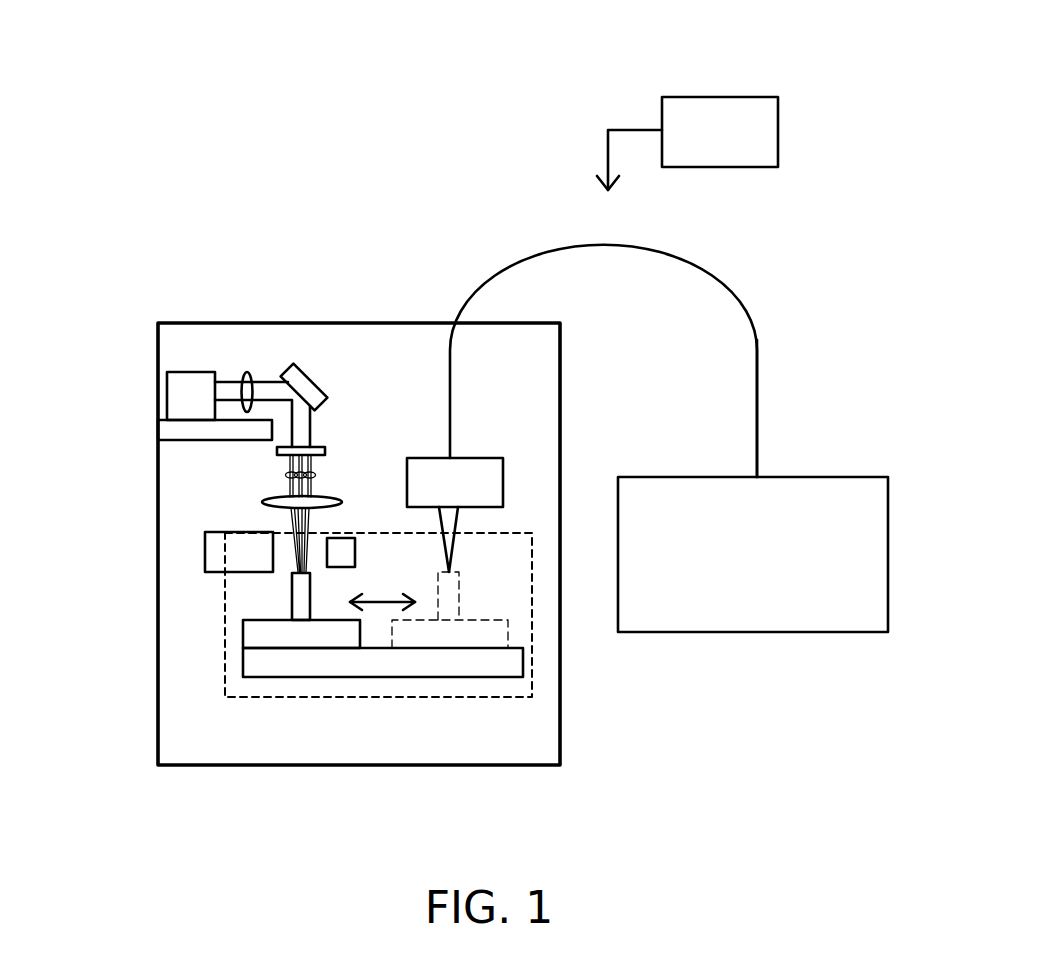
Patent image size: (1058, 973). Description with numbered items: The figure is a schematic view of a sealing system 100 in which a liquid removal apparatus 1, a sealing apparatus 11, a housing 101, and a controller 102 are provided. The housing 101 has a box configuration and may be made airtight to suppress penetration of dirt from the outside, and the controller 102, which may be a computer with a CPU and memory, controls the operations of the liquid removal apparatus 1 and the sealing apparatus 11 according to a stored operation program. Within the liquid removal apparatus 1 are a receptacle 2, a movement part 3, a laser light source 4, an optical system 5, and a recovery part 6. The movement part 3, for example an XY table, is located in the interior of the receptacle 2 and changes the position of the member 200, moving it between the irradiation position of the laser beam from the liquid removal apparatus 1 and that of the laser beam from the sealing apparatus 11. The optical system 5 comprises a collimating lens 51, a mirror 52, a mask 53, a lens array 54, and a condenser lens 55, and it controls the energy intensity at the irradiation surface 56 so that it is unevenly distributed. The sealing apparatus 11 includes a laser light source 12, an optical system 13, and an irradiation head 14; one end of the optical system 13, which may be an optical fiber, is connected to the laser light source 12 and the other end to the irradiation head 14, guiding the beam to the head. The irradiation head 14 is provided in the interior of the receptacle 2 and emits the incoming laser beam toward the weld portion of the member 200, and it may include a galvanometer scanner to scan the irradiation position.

The sealing system 100 is at (138, 240).
The liquid removal apparatus 1 is at (265, 342).
The housing 101 is at (378, 323).
The laser light source 4 is at (177, 393).
The optical system 5 is at (242, 475).
The collimating lens 51 is at (247, 372).
The mirror 52 is at (305, 370).
The mask 53 is at (318, 447).
The lens array 54 is at (322, 475).
The condenser lens 55 is at (265, 500).
The recovery part 6 is at (205, 552).
The irradiation surface 56 is at (312, 557).
The member 200 is at (292, 597).
The movement part 3 is at (296, 663).
The receptacle 2 is at (225, 673).
The irradiation head 14 is at (503, 478).
The sealing apparatus 11 is at (767, 265).
The optical system 13 is at (757, 355).
The laser light source 12 is at (745, 590).
The controller 102 is at (723, 97).